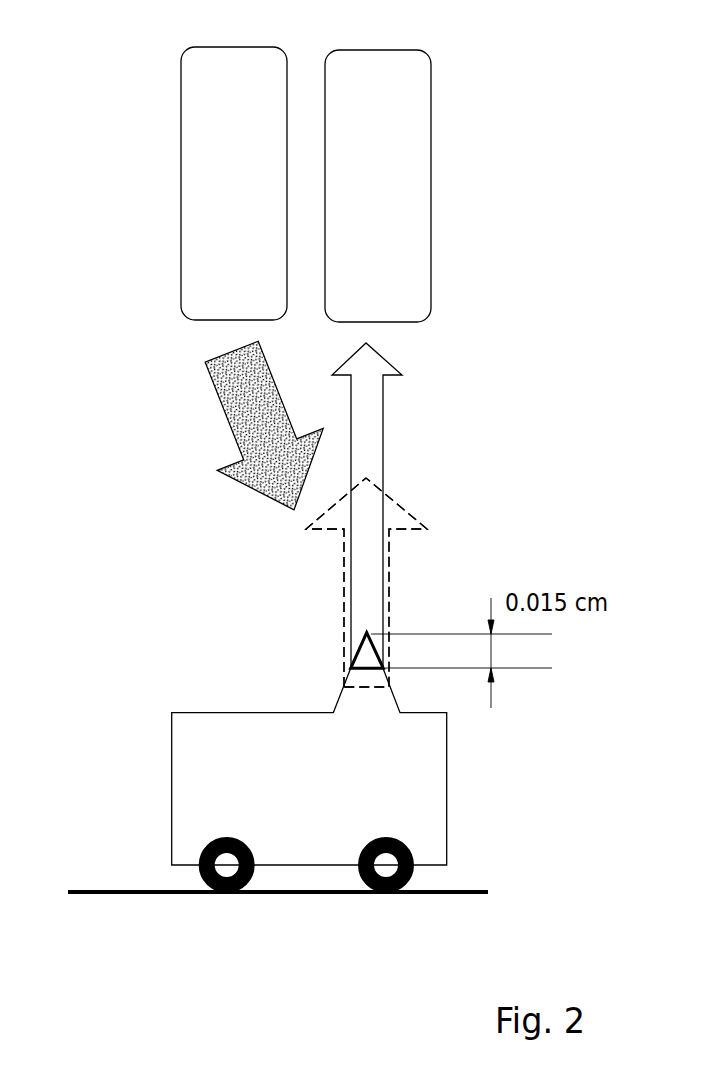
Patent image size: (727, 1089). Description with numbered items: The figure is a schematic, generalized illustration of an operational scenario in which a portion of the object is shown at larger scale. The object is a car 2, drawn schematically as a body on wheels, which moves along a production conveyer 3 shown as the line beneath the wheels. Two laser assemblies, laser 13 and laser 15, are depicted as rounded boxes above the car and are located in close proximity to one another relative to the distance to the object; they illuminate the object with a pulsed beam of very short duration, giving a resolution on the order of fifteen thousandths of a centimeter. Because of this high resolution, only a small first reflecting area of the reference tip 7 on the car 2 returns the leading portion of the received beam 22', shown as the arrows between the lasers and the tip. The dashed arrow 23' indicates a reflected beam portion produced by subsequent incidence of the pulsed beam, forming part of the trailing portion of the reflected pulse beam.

The car 2 is at (195, 788).
The production conveyer 3 is at (127, 893).
The reference tip 7 is at (368, 708).
The laser 13 is at (181, 183).
The laser 15 is at (433, 168).
The leading portion of the received beam 22' is at (252, 431).
The reflected beam portion 23' is at (337, 582).